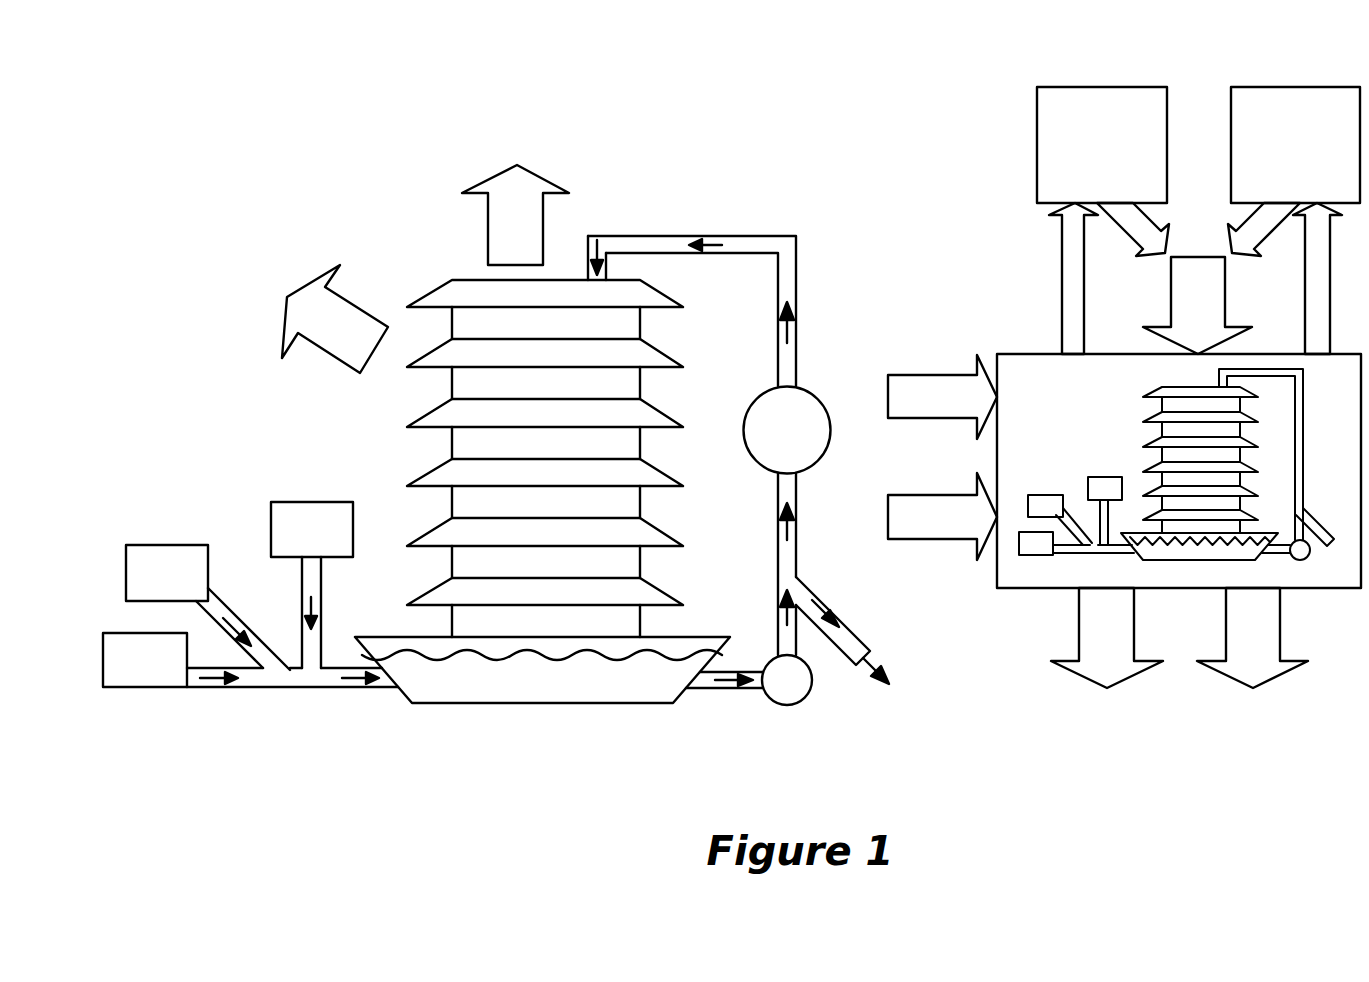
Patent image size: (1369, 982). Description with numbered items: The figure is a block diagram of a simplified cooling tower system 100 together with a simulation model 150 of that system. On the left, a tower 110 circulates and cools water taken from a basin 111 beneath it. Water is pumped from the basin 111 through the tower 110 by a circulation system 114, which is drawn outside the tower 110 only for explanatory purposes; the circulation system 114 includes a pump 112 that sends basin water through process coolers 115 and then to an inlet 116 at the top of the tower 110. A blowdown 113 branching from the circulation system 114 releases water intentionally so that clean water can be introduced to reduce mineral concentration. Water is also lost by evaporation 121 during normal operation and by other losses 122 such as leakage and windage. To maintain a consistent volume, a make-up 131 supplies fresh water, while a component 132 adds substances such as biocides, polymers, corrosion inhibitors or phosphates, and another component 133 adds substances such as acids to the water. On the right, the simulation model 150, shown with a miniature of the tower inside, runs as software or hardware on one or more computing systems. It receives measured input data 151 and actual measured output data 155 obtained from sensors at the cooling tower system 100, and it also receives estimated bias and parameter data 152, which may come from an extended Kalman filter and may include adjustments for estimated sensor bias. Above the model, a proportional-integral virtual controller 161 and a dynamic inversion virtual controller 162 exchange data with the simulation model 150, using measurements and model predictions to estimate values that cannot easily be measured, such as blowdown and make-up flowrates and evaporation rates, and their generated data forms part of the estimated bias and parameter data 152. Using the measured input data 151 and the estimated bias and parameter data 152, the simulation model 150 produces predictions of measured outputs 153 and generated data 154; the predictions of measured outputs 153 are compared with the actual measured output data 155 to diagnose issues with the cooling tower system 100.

The cooling tower system 100 is at (197, 264).
The tower 110 is at (408, 481).
The basin 111 is at (618, 704).
The pump 112 is at (770, 691).
The blowdown 113 is at (840, 620).
The circulation system 114 is at (797, 348).
The process coolers 115 is at (769, 441).
The inlet 116 is at (587, 276).
The evaporation 121 is at (498, 233).
The other water loss 122 is at (325, 343).
The make-up 131 is at (127, 671).
The substance-adding component 132 is at (149, 584).
The substance-adding component 133 is at (294, 539).
The simulation model 150 is at (1045, 409).
The measured input data 151 is at (925, 408).
The estimated bias and parameter data 152 is at (1180, 308).
The predictions of measured outputs 153 is at (1088, 636).
The generated data 154 is at (1235, 636).
The actual measured output data 155 is at (925, 528).
The proportional-integral virtual controller 161 is at (1083, 156).
The dynamic inversion virtual controller 162 is at (1277, 156).